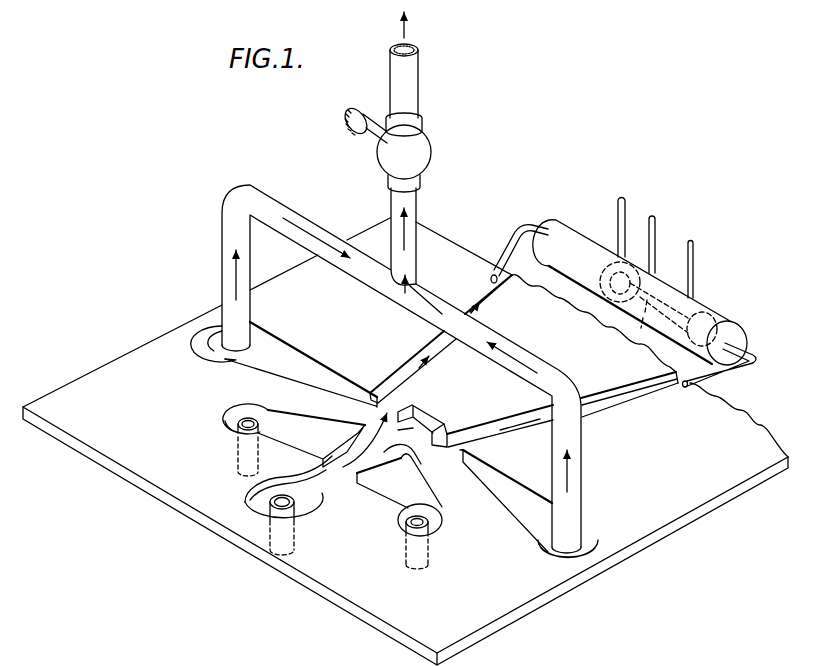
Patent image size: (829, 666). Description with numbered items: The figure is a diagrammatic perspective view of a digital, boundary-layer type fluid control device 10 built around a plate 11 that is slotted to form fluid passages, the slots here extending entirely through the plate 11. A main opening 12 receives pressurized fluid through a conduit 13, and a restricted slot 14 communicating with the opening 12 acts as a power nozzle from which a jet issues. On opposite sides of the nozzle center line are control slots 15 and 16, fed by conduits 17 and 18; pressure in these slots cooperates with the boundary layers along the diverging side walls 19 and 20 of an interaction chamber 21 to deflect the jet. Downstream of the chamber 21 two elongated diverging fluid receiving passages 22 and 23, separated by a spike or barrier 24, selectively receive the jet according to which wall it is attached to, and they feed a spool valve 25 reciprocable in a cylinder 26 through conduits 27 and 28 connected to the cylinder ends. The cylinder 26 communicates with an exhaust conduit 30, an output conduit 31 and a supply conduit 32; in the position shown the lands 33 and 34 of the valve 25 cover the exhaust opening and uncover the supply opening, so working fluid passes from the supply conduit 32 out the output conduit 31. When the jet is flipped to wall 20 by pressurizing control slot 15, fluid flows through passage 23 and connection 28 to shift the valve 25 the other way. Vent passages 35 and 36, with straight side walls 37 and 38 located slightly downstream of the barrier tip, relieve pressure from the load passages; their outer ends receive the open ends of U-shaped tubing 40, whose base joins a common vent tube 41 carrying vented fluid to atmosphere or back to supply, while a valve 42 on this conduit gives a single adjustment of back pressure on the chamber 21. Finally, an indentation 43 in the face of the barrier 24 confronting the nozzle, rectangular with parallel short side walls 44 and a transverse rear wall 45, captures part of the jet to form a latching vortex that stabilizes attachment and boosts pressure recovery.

The digital fluid control device 10 is at (681, 559).
The plate 11 is at (508, 605).
The main opening 12 is at (258, 501).
The conduit 13 is at (288, 512).
The restricted slot 14 is at (322, 481).
The control slot 15 is at (232, 427).
The control slot 16 is at (399, 525).
The conduit 17 is at (247, 420).
The conduit 18 is at (429, 522).
The side wall 19 is at (353, 438).
The side wall 20 is at (396, 461).
The interaction chamber 21 is at (412, 456).
The fluid receiving passage 22 is at (435, 347).
The fluid receiving passage 23 is at (597, 407).
The barrier 24 is at (502, 402).
The spool valve 25 is at (643, 306).
The cylinder 26 is at (569, 228).
The conduit 27 is at (512, 253).
The conduit 28 is at (722, 369).
The exhaust conduit 30 is at (620, 204).
The output conduit 31 is at (656, 232).
The supply conduit 32 is at (694, 258).
The land 33 is at (605, 268).
The land 34 is at (718, 314).
The vent passage 35 is at (262, 353).
The vent passage 36 is at (513, 515).
The side wall 37 is at (316, 365).
The side wall 38 is at (505, 478).
The U-shaped tubing 40 is at (577, 490).
The common vent tube 41 is at (411, 201).
The valve 42 is at (372, 141).
The indentation 43 is at (413, 428).
The short side walls 44 is at (403, 410).
The rear wall 45 is at (428, 420).